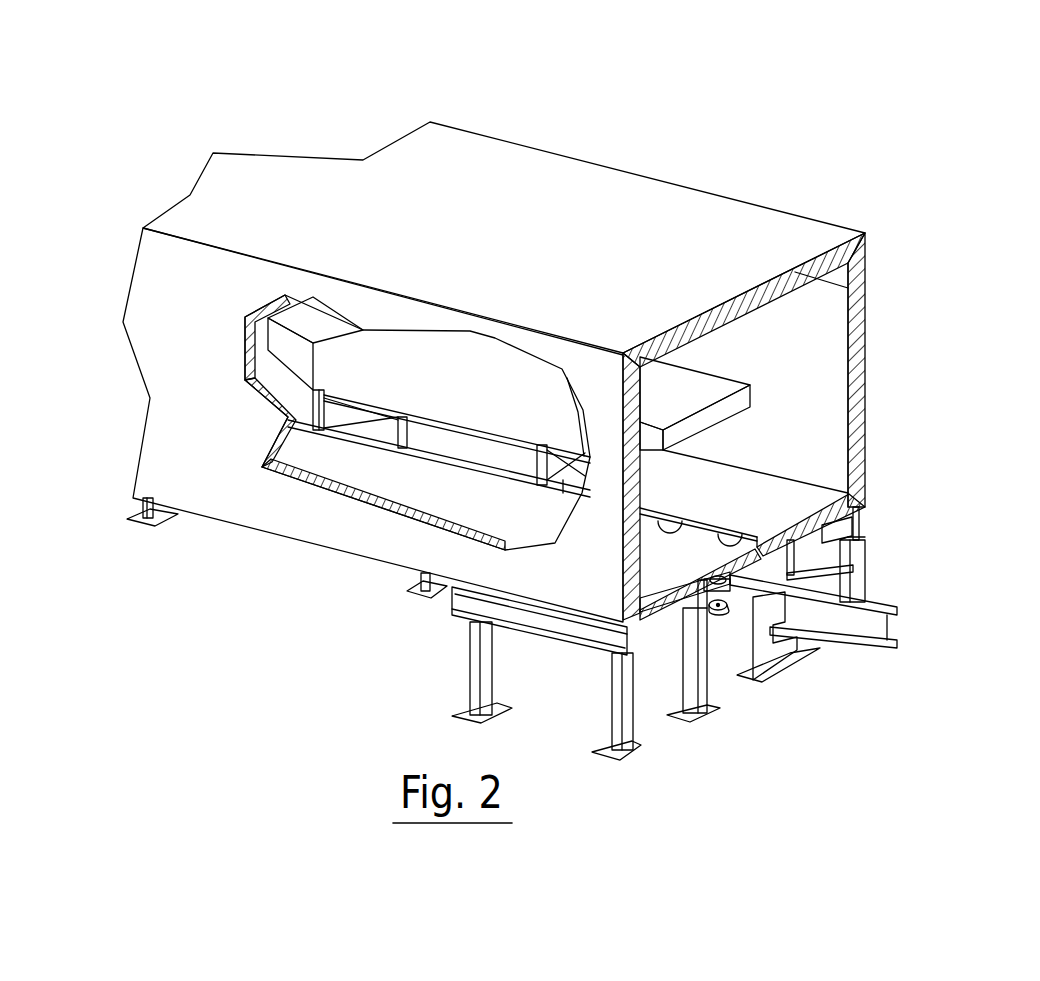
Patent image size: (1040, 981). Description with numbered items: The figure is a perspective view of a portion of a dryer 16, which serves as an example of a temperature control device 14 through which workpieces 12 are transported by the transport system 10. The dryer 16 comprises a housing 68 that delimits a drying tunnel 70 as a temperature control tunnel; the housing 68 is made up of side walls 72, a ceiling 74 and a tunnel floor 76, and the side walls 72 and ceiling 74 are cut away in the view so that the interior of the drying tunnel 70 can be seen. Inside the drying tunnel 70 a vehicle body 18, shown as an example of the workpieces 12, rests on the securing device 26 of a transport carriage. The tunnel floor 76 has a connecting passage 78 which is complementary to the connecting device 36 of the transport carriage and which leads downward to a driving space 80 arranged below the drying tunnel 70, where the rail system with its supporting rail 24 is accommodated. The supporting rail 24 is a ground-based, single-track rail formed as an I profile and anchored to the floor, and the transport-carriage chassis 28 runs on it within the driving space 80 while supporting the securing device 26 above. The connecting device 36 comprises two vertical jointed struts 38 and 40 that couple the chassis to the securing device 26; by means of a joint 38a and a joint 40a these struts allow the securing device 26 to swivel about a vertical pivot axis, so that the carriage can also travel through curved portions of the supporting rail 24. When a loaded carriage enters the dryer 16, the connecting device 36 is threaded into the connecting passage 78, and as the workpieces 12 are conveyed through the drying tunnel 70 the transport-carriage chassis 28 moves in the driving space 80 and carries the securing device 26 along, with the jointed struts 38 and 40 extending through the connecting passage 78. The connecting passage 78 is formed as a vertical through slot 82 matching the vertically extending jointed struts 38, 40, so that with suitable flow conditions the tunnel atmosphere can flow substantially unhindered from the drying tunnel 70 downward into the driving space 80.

The transport system 10 is at (962, 587).
The workpieces 12 is at (745, 370).
The temperature control device 14 is at (650, 112).
The dryer 16 is at (710, 157).
The vehicle bodies 18 is at (740, 405).
The supporting rail 24 is at (877, 630).
The securing device 26 is at (310, 403).
The transport-carriage chassis 28 is at (736, 622).
The connecting device 36 is at (412, 430).
The jointed strut 38 is at (402, 433).
The joint 38a is at (397, 430).
The jointed strut 40 is at (555, 510).
The joint 40a is at (577, 443).
The housing 68 is at (760, 230).
The drying tunnel 70 is at (805, 451).
The side walls 72 is at (866, 326).
The ceiling 74 is at (498, 183).
The tunnel floor 76 is at (650, 573).
The connecting passage 78 is at (716, 528).
The driving space 80 is at (805, 567).
The through slot 82 is at (656, 513).